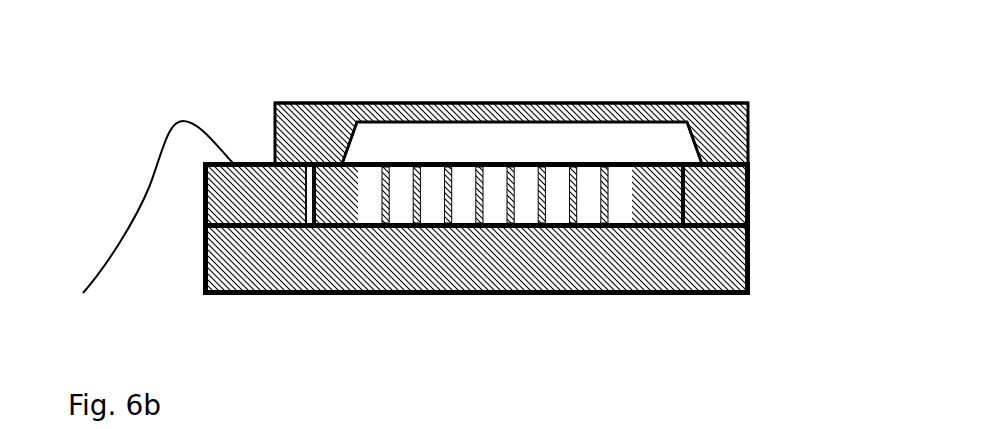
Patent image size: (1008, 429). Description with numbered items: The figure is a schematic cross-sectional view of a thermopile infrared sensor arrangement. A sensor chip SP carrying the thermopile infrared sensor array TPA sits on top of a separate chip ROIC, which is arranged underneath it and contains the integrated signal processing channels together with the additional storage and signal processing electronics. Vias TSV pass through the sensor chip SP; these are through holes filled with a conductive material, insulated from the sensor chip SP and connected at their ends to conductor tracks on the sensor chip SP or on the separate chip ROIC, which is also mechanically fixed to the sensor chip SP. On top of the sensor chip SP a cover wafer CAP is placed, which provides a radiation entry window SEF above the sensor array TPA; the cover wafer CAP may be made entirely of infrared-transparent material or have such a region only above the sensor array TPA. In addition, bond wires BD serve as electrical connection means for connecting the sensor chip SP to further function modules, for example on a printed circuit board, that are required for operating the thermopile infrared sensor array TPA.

The cover wafer CAP is at (318, 102).
The radiation entry window SEF is at (513, 101).
The sensor chip SP is at (690, 207).
The vias TSV is at (748, 263).
The thermopile infrared sensor array TPA is at (513, 172).
The bond wires BD is at (119, 252).
The separate chip ROIC is at (476, 259).